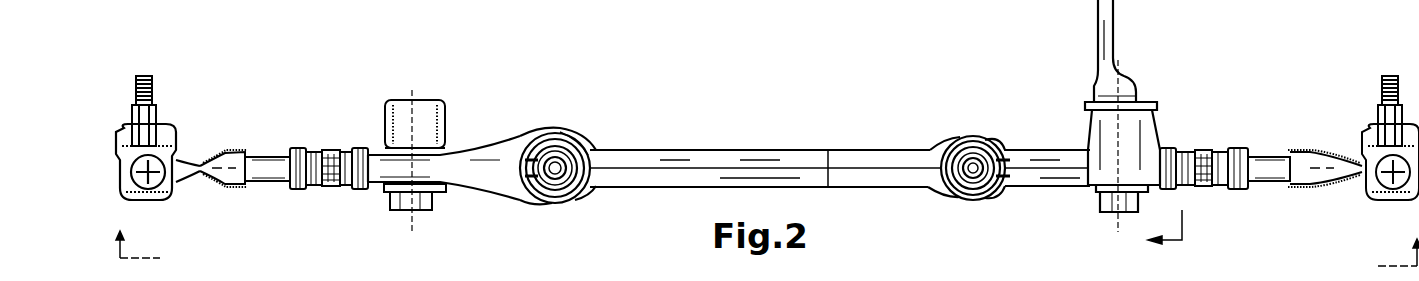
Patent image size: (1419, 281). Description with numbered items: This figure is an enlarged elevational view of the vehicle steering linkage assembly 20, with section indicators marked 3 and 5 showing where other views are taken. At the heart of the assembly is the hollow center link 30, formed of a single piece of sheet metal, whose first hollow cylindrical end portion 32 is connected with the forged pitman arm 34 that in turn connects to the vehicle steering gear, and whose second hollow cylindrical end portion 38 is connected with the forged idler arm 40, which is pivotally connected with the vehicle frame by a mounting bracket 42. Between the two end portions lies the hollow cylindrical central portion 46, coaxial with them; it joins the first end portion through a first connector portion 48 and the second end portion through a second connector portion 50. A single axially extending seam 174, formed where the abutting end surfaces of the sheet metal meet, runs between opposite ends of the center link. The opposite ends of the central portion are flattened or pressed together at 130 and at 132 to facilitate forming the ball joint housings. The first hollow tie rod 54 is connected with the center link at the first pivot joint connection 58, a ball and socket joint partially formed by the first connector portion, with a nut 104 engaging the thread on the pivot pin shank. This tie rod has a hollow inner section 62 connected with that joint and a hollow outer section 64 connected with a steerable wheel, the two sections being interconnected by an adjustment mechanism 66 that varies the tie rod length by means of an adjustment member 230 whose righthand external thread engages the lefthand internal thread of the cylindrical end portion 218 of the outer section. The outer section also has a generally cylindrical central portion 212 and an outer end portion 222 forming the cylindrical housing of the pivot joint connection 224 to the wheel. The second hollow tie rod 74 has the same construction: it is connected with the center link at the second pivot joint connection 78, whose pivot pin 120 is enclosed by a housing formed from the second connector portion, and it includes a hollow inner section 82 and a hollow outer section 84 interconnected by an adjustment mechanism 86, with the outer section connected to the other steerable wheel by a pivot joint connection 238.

The linkage assembly 20 is at (903, 222).
The center link 30 is at (698, 200).
The first hollow cylindrical end portion 32 is at (445, 190).
The pitman arm 34 is at (420, 128).
The second hollow cylindrical end portion 38 is at (1030, 192).
The idler arm 40 is at (1100, 146).
The mounting bracket 42 is at (1088, 2).
The central portion 46 is at (688, 150).
The first connector portion 48 is at (555, 205).
The second connector portion 50 is at (952, 136).
The first hollow tie rod 54 is at (300, 156).
The first pivot joint connection 58 is at (572, 132).
The hollow inner section 62 is at (505, 165).
The hollow outer section 64 is at (235, 150).
The adjustment mechanism 66 is at (322, 190).
The second hollow tie rod 74 is at (1254, 196).
The second pivot joint connection 78 is at (940, 135).
The hollow inner section 82 is at (1010, 152).
The hollow outer section 84 is at (1310, 152).
The adjustment mechanism 86 is at (1202, 160).
The nut 104 is at (548, 196).
The pivot pin 120 is at (975, 186).
The flattened end portion 130 is at (598, 200).
The flattened end portion 132 is at (924, 192).
The seam 174 is at (826, 168).
The central portion 212 is at (225, 188).
The cylindrical end portion 218 is at (278, 180).
The outer end portion 222 is at (140, 204).
The pivot joint connection 224 is at (148, 140).
The adjustment member 230 is at (330, 160).
The pivot joint connection 238 is at (1386, 124).
The section line 3- 3 is at (765, 235).
The section line 5- 5 is at (1154, 232).